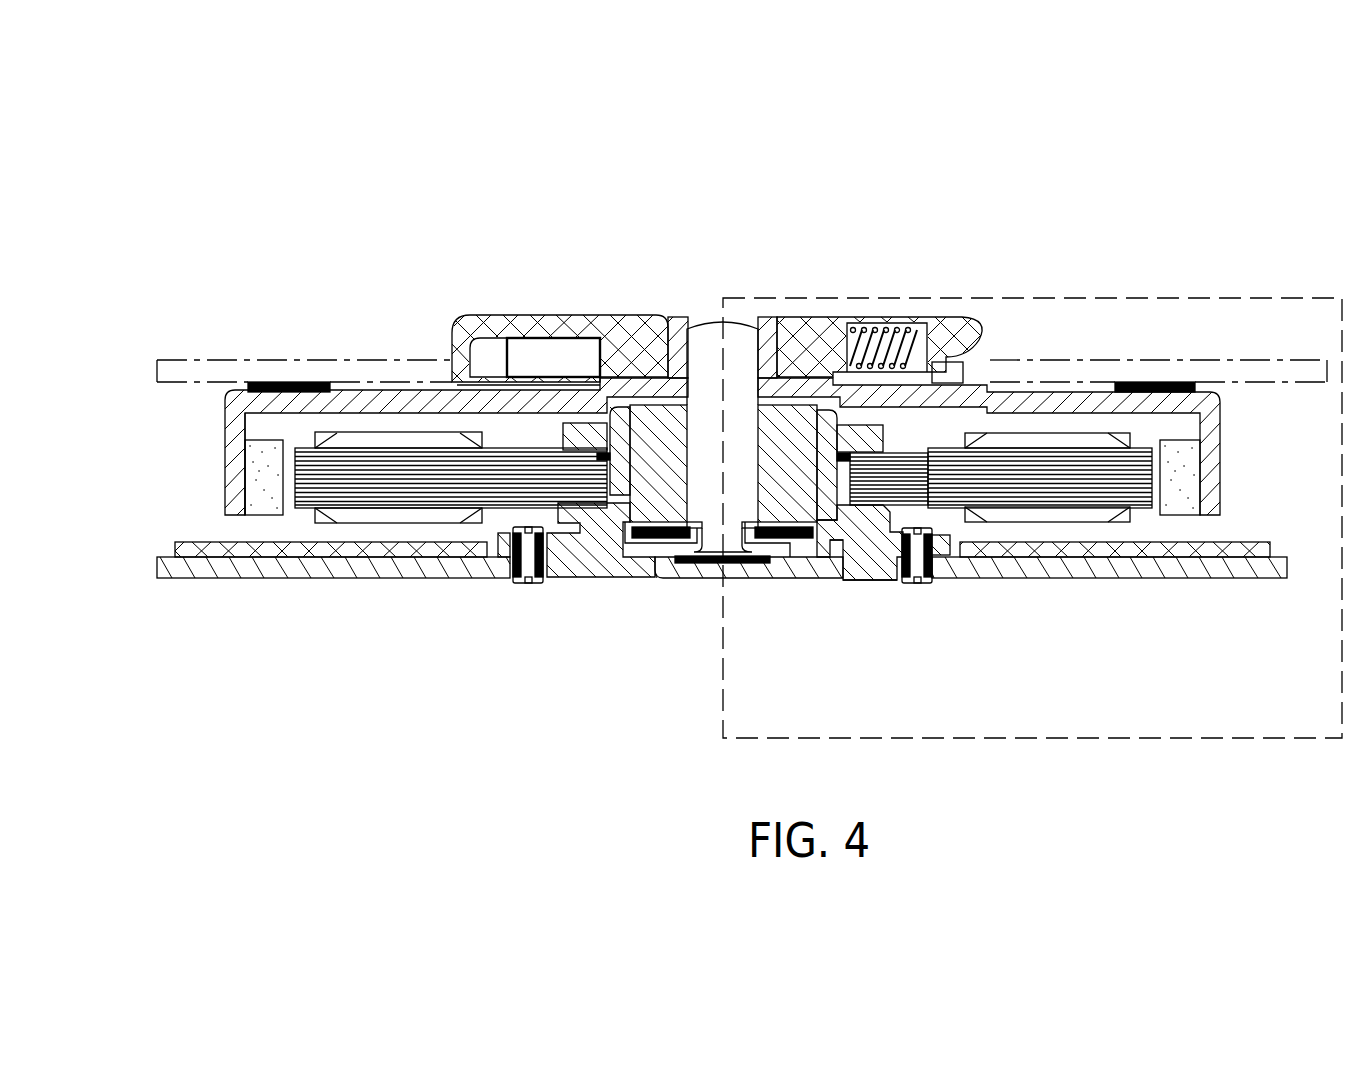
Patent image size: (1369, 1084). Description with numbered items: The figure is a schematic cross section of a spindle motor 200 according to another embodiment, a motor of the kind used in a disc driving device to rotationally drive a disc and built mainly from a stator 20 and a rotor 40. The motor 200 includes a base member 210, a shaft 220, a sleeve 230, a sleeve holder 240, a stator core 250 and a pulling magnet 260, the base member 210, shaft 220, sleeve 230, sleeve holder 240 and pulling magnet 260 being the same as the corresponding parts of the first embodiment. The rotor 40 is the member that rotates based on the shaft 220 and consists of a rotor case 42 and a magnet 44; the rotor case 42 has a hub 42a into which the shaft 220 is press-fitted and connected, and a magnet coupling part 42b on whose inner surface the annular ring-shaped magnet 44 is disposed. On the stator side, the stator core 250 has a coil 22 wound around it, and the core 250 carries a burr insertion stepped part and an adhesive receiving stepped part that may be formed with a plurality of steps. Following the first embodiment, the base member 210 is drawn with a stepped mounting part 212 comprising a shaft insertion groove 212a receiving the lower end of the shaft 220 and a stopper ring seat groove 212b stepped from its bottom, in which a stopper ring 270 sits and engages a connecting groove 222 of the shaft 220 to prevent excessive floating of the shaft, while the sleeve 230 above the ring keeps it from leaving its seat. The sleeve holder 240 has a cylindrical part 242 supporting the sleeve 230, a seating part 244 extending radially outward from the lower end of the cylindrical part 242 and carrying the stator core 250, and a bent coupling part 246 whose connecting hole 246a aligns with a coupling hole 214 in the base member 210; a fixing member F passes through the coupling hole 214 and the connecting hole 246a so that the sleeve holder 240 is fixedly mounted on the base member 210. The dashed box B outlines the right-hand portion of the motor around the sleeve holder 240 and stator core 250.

The spindle motor 200 is at (541, 123).
The base assembly portion B is at (1140, 296).
The stator 20 is at (714, 624).
The base member 210 is at (313, 572).
The coil 22 is at (392, 518).
The rotor 40 is at (453, 330).
The rotor case 42 is at (680, 379).
The hub 42a is at (665, 345).
The magnet coupling part 42b is at (233, 440).
The magnet 44 is at (250, 484).
The fixing member F is at (507, 560).
The boss portion 270 is at (615, 547).
The base bracket 212 is at (720, 591).
The base bracket bottom portion 212a is at (760, 560).
The base bracket wall portion 212b is at (797, 540).
The bottom plate 222 is at (663, 563).
The shaft 220 is at (713, 527).
The sleeve 230 is at (773, 423).
The sleeve holder 240 is at (722, 622).
The bracket upper portion 242 is at (845, 517).
The bracket lower portion 244 is at (830, 547).
The fastening portion 214 is at (898, 580).
The flexible circuit layer 246 is at (798, 687).
The flexible circuit support block 246a is at (938, 560).
The stator core 250 is at (900, 463).
The pulling magnet 260 is at (876, 412).